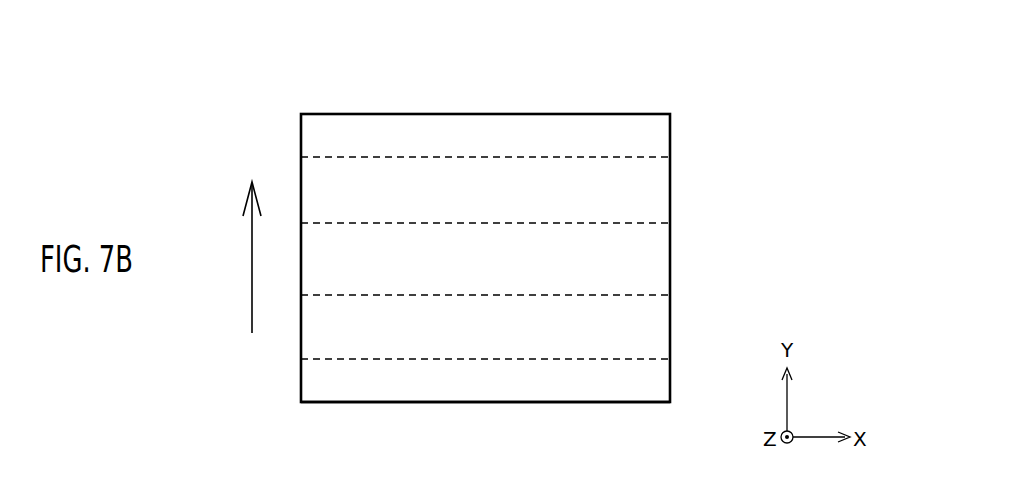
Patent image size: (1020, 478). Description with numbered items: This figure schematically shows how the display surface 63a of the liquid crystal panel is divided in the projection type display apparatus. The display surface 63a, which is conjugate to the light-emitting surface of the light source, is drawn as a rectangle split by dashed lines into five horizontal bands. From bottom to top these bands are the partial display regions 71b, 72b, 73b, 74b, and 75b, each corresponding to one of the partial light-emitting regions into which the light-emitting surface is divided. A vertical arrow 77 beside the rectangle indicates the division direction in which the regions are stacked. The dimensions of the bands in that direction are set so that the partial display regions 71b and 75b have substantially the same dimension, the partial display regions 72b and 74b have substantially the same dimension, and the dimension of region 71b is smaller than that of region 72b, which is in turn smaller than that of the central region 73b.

The display surface 63a is at (483, 113).
The partial display region 71b is at (662, 379).
The partial display region 72b is at (662, 322).
The partial display region 73b is at (662, 255).
The partial display region 74b is at (662, 190).
The partial display region 75b is at (662, 135).
The direction arrow (stacking direction) 77 is at (252, 259).